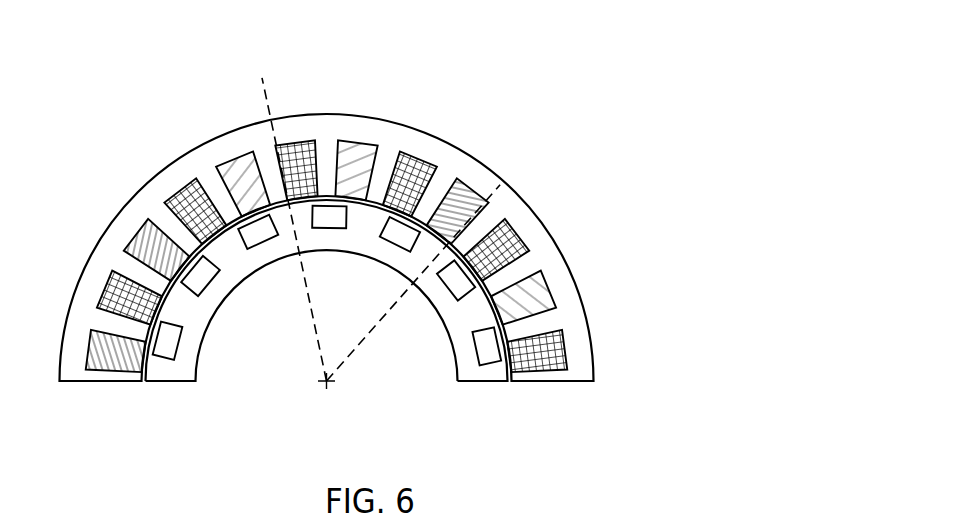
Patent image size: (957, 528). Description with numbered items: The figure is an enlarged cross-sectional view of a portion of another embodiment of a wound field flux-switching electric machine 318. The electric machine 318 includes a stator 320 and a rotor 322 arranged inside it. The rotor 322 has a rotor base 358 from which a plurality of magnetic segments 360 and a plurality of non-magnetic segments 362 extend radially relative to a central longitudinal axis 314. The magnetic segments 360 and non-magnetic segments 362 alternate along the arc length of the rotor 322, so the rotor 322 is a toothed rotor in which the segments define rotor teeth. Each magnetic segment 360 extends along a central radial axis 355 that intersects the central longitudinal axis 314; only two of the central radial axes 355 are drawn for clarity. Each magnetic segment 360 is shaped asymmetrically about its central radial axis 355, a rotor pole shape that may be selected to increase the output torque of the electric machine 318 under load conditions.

The central longitudinal axis 314 is at (326, 387).
The wound field flux-switching electric machine 318 is at (541, 62).
The stator 320 is at (516, 213).
The rotor 322 is at (477, 392).
The central radial axis 355 is at (276, 105).
The rotor base 358 is at (455, 307).
The magnetic segment 360 is at (178, 307).
The non-magnetic segment 362 is at (203, 275).